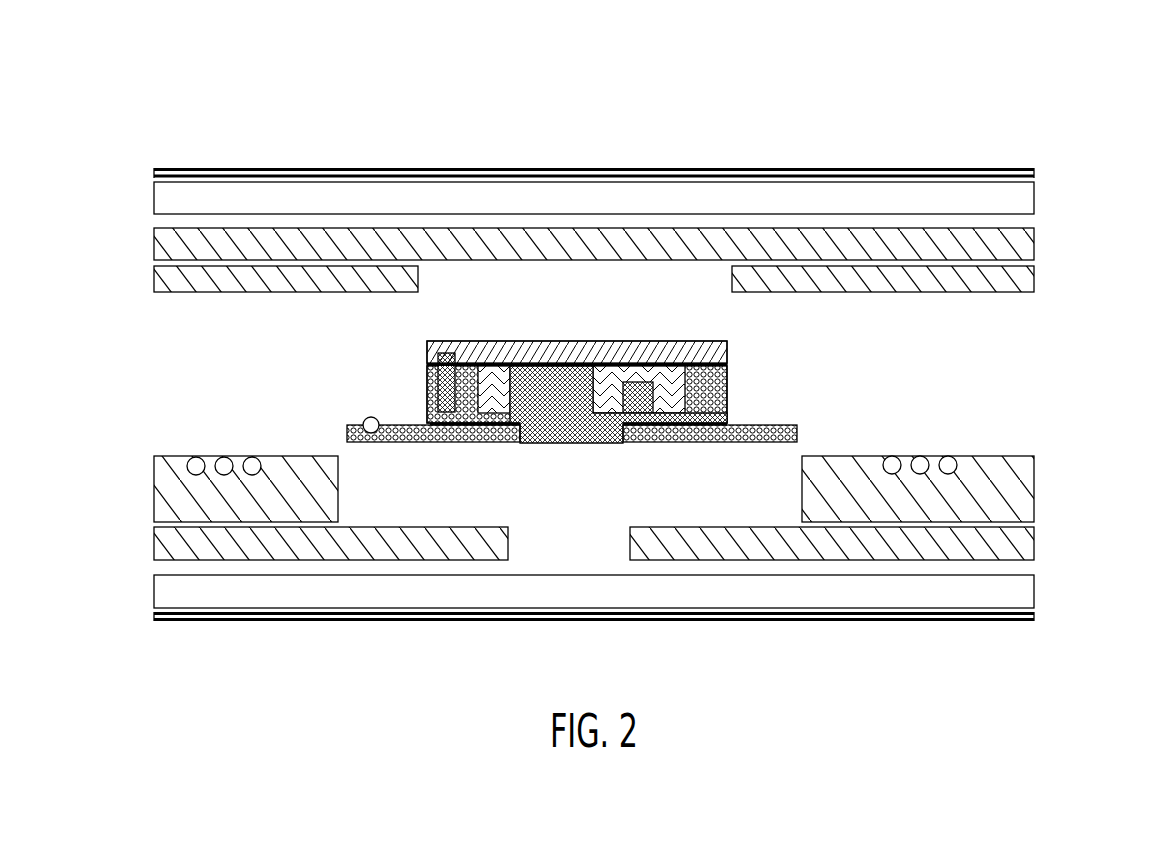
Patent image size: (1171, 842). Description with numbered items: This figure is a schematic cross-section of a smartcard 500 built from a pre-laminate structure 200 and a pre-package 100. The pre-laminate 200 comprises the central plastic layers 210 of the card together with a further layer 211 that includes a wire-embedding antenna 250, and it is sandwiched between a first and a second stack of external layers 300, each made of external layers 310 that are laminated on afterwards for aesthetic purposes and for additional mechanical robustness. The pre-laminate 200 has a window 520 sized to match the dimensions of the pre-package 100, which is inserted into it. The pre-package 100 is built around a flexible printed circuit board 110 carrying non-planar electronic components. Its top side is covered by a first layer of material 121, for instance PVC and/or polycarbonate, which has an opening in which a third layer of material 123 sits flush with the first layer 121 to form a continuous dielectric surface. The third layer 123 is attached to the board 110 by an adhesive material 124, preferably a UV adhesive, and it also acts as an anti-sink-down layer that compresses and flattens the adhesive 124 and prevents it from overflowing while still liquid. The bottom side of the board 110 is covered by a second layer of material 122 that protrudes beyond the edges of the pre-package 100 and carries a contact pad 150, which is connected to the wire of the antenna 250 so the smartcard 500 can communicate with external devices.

The smartcard 500 is at (1072, 123).
The stack of external layers 300 is at (137, 168).
The external layer 310 is at (1046, 194).
The pre-laminate structure 200 is at (132, 228).
The layer including a wire-embedding antenna 211 is at (1046, 478).
The central plastic layers 210 is at (1046, 543).
The wire-embedding antenna 250 is at (223, 487).
The window 520 is at (565, 508).
The pre-package 100 is at (947, 342).
The flexible printed circuit board 110 is at (533, 448).
The first layer of material 121 is at (417, 394).
The second layer of material 122 is at (809, 435).
The third layer of material 123 is at (738, 348).
The adhesive material 124 is at (690, 385).
The contact pad 150 is at (372, 455).